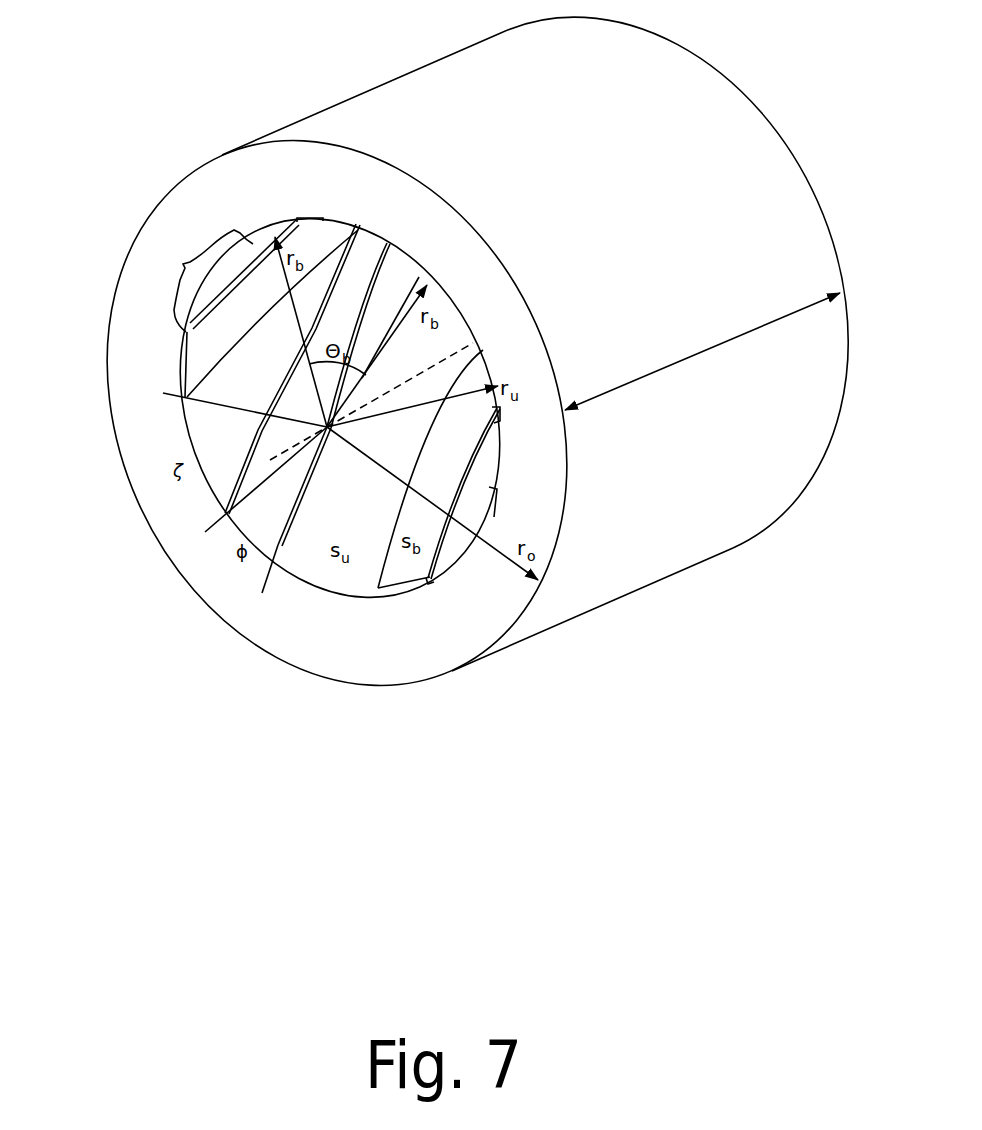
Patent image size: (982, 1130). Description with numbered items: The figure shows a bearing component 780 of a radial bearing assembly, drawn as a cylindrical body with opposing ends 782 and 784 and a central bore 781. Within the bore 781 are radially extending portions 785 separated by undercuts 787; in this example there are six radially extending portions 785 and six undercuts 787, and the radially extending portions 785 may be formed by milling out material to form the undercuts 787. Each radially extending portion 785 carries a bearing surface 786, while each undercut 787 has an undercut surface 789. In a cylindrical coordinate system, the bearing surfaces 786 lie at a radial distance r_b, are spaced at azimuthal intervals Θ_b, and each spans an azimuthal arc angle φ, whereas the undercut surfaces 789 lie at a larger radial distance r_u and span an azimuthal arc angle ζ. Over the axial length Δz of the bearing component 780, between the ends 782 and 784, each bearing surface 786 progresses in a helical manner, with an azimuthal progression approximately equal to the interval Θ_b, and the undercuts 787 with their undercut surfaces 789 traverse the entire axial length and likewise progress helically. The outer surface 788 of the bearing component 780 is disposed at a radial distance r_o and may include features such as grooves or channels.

The bearing component 780 is at (435, 388).
The bore 781 is at (347, 594).
The end 782 is at (386, 180).
The end 784 is at (716, 68).
The radially extending portion 785 is at (177, 360).
The bearing surface 786 is at (200, 348).
The undercut 787 is at (198, 251).
The outer surface 788 is at (705, 298).
The undercut surface 789 is at (218, 465).